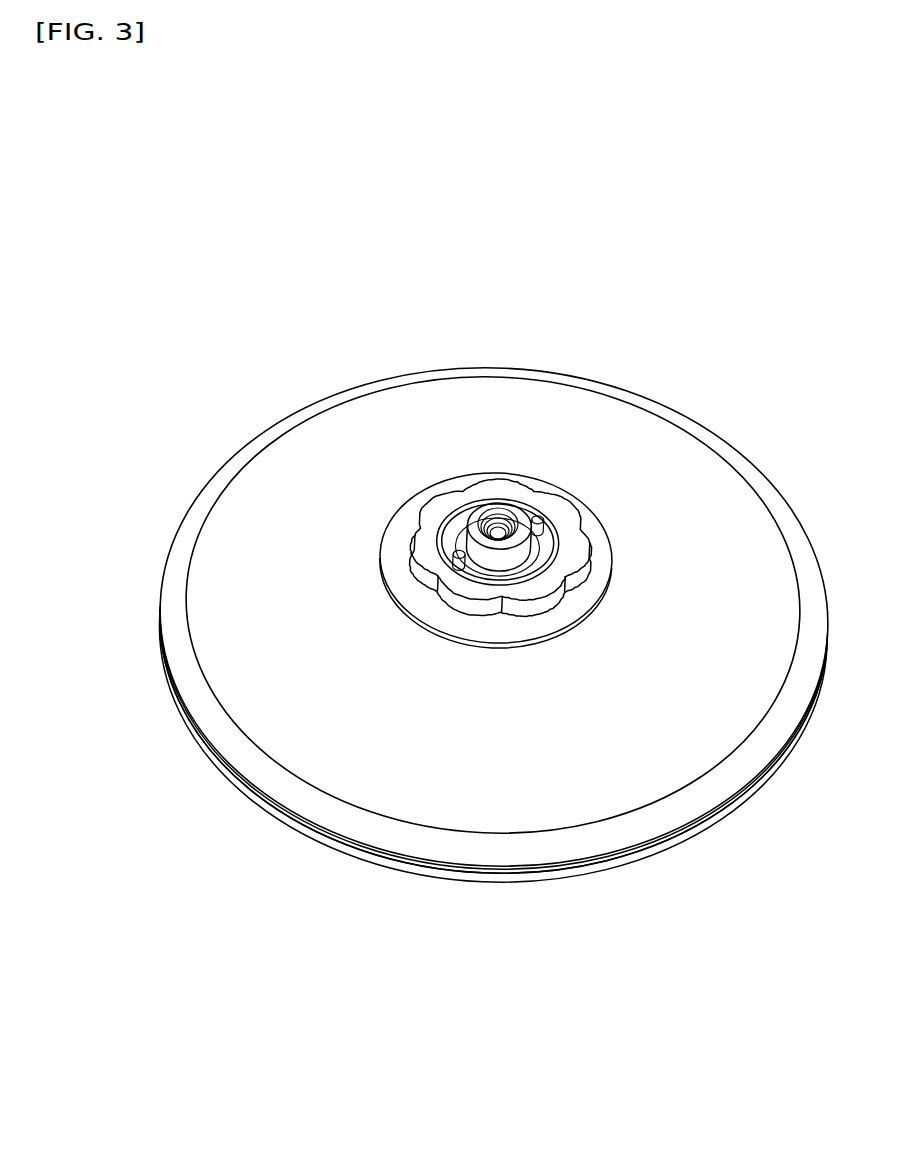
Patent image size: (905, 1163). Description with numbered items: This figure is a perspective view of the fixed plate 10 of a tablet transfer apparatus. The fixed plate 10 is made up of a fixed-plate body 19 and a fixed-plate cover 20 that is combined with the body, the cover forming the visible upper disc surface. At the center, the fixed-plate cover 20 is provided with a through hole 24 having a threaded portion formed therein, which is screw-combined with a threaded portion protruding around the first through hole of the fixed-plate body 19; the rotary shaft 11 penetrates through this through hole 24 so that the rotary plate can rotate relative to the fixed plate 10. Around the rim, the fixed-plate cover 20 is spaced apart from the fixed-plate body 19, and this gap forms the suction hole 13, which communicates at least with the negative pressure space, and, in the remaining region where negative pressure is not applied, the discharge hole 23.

The fixed plate 10 is at (184, 369).
The rotary shaft 11 is at (503, 522).
The suction hole 13 is at (488, 787).
The fixed-plate body 19 is at (623, 862).
The fixed-plate cover 20 is at (730, 505).
The discharge hole 23 is at (415, 868).
The through hole 24 is at (563, 513).